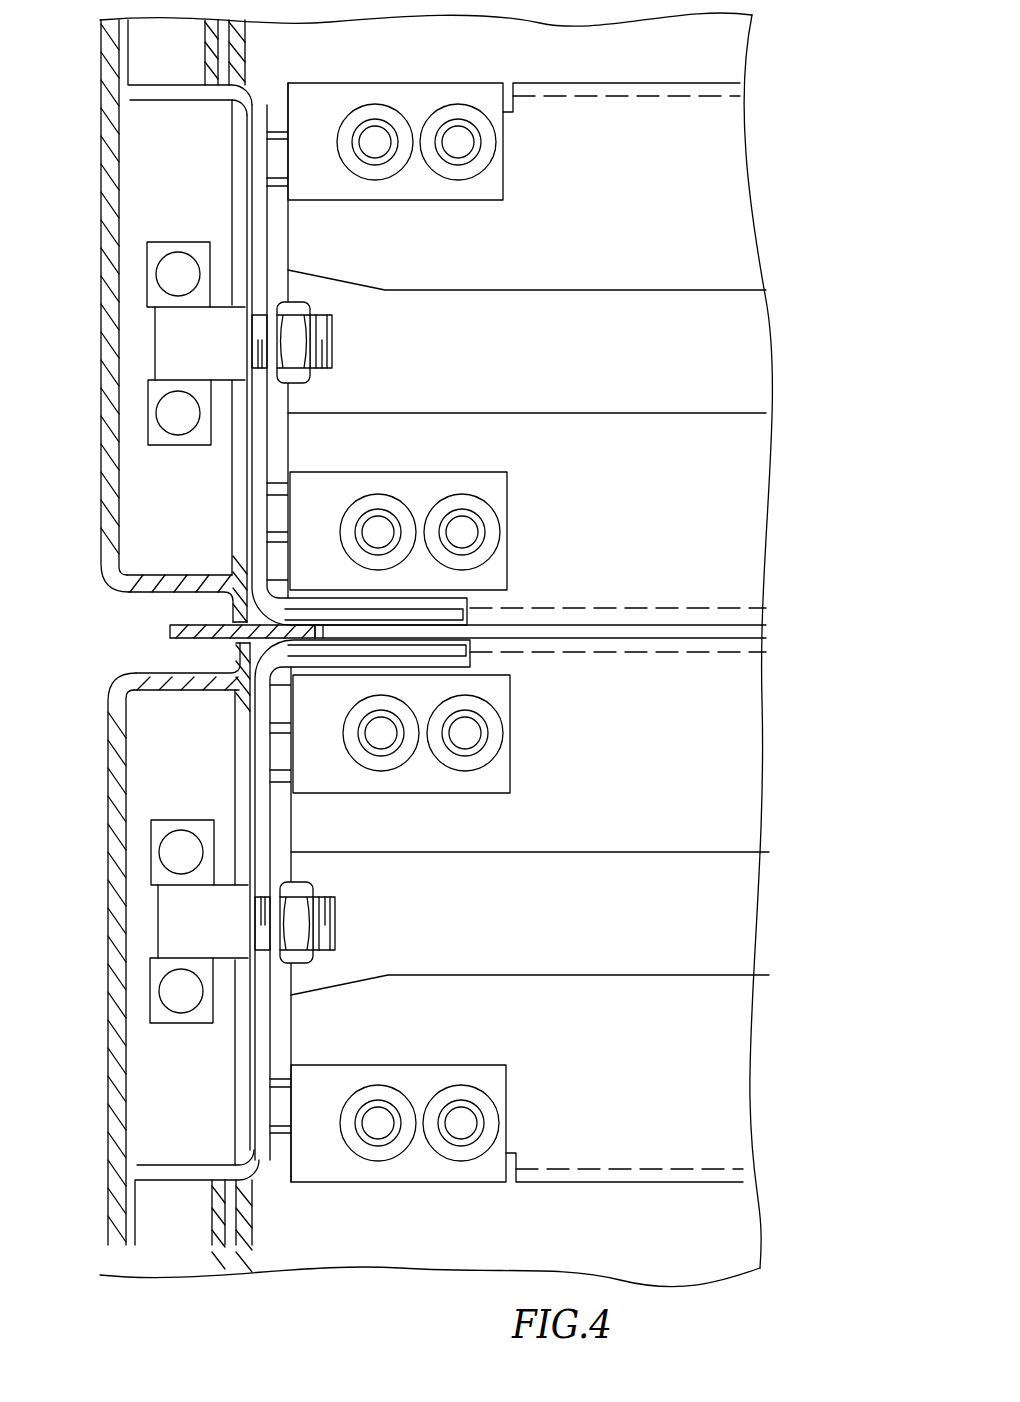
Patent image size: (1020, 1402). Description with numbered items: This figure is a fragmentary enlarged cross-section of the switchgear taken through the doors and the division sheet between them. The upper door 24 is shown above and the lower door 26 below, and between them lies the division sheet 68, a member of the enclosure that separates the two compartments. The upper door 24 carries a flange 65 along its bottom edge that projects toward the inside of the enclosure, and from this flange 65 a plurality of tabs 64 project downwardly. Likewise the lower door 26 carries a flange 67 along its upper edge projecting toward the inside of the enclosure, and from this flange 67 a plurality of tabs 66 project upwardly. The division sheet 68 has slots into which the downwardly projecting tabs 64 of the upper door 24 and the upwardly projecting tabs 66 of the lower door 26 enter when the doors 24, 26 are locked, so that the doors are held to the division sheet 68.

The upper door 24 is at (102, 474).
The lower door 26 is at (107, 735).
The tabs 64 is at (234, 603).
The flange 65 is at (193, 583).
The tabs 66 is at (236, 655).
The flange 67 is at (193, 689).
The division sheet 68 is at (170, 631).